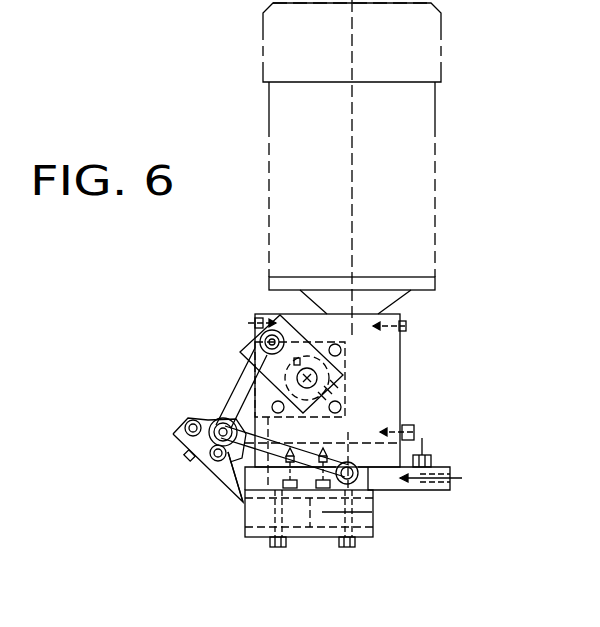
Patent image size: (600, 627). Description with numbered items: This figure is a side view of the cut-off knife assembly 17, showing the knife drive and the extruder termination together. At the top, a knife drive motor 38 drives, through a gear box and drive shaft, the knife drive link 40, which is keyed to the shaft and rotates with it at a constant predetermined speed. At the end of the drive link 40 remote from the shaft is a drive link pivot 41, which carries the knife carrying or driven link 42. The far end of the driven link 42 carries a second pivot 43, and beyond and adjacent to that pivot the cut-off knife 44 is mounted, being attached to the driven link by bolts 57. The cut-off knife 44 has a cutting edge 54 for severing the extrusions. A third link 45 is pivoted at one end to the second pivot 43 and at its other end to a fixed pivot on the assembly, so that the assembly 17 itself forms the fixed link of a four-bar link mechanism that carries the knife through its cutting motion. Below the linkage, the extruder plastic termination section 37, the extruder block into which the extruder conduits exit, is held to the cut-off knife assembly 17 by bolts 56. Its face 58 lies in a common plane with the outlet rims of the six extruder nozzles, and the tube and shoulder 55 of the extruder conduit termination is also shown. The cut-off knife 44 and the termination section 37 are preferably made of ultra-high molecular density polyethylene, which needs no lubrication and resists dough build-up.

The cut-off knife assembly 17 is at (417, 360).
The extruder plastic termination section 37 is at (247, 538).
The knife drive motor 38 is at (407, 175).
The knife drive link 40 is at (283, 314).
The drive link pivot 41 is at (258, 336).
The knife carrying or driven link 42 is at (238, 381).
The second pivot 43 is at (216, 418).
The cut-off knife 44 is at (213, 465).
The third link 45 is at (307, 437).
The cutting edge 54 is at (240, 500).
The tube and shoulder 55 is at (373, 508).
The bolts 56 is at (350, 545).
The bolts 57 is at (187, 458).
The face 58 is at (246, 527).